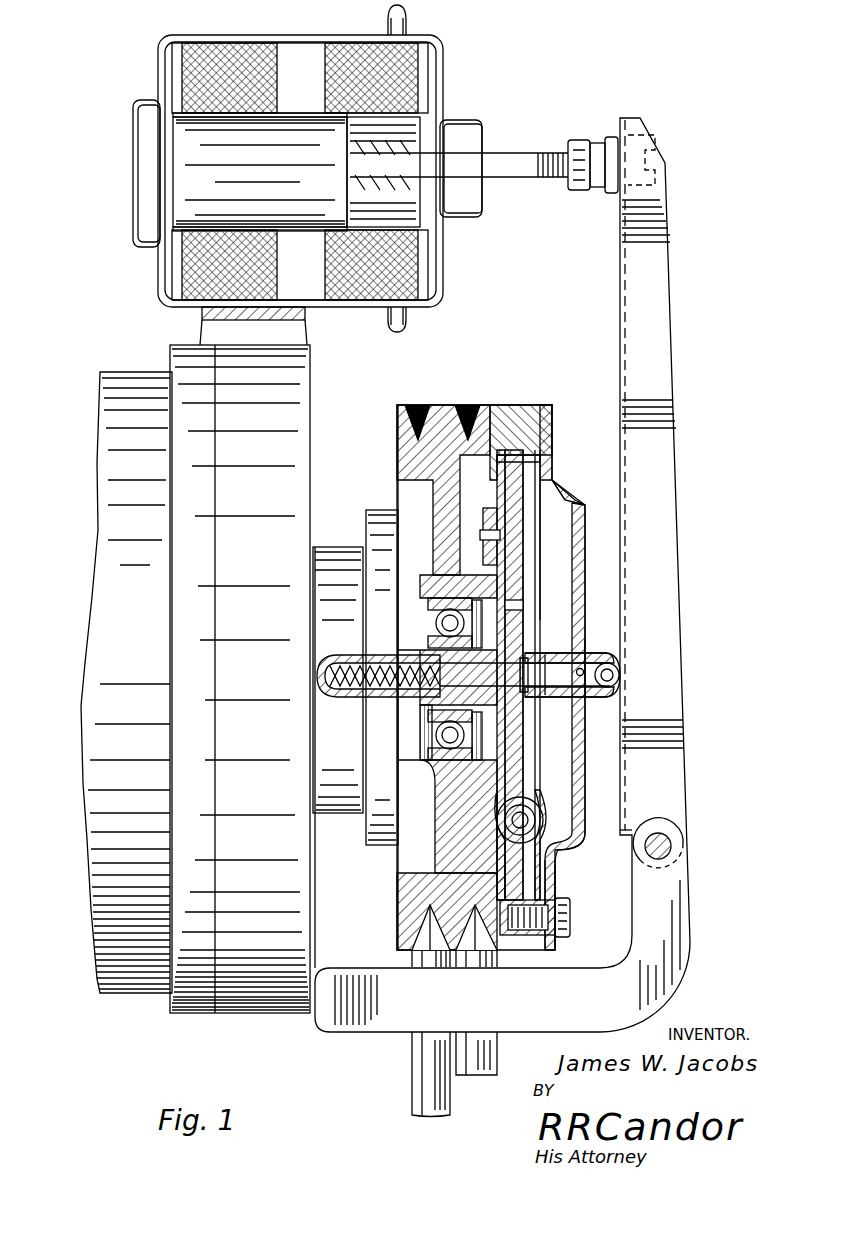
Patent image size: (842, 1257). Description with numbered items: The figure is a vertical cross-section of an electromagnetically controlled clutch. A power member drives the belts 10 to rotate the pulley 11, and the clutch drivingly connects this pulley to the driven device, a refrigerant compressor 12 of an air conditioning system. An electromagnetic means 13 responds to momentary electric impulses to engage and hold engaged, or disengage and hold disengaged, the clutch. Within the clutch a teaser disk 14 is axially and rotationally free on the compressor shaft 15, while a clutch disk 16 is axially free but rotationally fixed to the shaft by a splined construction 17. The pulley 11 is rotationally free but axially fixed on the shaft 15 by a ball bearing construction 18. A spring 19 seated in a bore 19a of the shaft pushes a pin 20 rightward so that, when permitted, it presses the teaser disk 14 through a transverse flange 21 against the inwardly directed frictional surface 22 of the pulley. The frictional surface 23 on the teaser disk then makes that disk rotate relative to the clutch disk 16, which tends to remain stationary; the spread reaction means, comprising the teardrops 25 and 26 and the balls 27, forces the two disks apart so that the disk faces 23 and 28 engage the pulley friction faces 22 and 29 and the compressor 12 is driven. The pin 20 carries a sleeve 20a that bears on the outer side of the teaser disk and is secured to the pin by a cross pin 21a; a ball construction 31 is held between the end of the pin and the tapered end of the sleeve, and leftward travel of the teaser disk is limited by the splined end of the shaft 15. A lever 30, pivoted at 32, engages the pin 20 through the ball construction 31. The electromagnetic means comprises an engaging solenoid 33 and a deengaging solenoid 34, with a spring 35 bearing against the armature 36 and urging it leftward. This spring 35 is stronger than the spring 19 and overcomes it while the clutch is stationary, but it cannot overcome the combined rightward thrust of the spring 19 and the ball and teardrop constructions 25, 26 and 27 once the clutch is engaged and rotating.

The belts 10 is at (462, 1085).
The pulley 11 is at (483, 402).
The refrigerant compressor 12 is at (100, 398).
The electromagnetic means 13 is at (302, 35).
The teaser disk 14 is at (530, 580).
The compressor shaft 15 is at (492, 650).
The clutch disk 16 is at (490, 505).
The splined construction 17 is at (442, 680).
The ball bearing construction 18 is at (442, 604).
The spring 19 is at (388, 700).
The bore 19a is at (352, 695).
The pin 20 is at (570, 700).
The sleeve 20a is at (592, 655).
The transverse flange 21 is at (575, 680).
The cross pin 21a is at (591, 680).
The frictional surface 22 is at (548, 476).
The frictional surface 23 is at (540, 458).
The teardrop 25 is at (552, 822).
The teardrop 26 is at (500, 820).
The balls 27 is at (560, 845).
The disk face 28 is at (497, 467).
The friction face 29 is at (492, 482).
The lever 30 is at (677, 443).
The ball construction 31 is at (619, 672).
The pivot 32 is at (672, 856).
The engaging solenoid 33 is at (424, 34).
The deengaging solenoid 34 is at (190, 55).
The spring 35 is at (452, 145).
The armature 36 is at (178, 165).